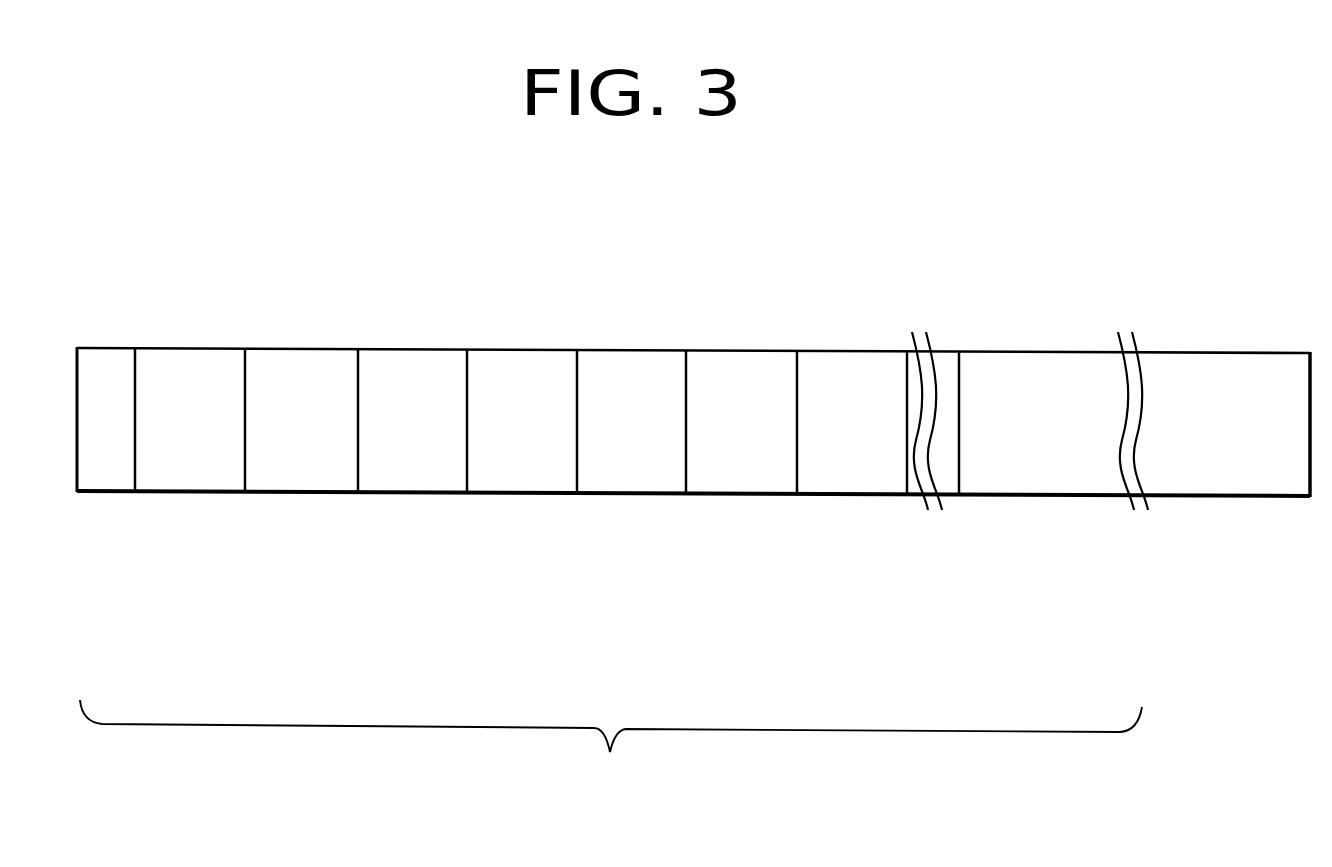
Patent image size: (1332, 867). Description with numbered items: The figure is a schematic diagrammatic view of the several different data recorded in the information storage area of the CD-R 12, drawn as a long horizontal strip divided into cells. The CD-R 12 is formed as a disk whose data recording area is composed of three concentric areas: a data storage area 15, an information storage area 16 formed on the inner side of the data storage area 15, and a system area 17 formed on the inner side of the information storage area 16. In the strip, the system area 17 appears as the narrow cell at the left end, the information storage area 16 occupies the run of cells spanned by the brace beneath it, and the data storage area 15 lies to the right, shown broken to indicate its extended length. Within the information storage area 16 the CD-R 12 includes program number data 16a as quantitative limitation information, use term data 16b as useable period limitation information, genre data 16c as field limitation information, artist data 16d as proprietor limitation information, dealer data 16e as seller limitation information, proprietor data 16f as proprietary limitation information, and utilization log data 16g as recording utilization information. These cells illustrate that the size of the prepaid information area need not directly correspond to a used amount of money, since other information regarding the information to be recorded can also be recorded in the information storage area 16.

The CD-R 12 is at (803, 250).
The data storage area 15 is at (1033, 355).
The information storage area 16 is at (611, 748).
The program number data 16a is at (172, 493).
The use term data 16b is at (298, 347).
The genre data 16c is at (391, 493).
The artist data 16d is at (522, 355).
The dealer data 16e is at (620, 494).
The proprietor data 16f is at (748, 352).
The utilization log data 16g is at (848, 495).
The system area 17 is at (108, 347).